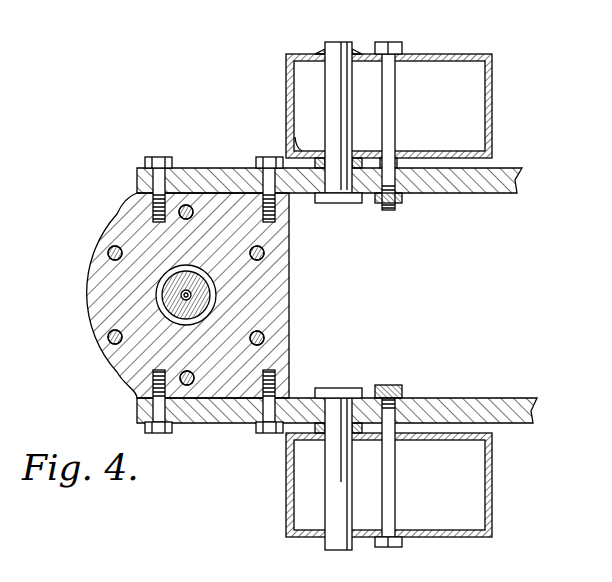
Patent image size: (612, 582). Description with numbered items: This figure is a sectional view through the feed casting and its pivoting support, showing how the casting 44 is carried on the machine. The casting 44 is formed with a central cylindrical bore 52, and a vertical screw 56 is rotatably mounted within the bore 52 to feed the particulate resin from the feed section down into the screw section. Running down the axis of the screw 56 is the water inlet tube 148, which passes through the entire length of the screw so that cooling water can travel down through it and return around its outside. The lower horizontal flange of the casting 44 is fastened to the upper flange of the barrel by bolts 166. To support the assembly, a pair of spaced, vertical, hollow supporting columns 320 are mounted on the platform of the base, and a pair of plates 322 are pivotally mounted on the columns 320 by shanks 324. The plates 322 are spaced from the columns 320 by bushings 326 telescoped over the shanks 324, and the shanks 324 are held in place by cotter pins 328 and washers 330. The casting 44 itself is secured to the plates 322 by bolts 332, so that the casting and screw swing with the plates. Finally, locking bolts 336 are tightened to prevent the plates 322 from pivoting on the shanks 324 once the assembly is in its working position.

The casting 44 is at (179, 316).
The central cylindrical bore 52 is at (123, 362).
The vertical screw 56 is at (190, 295).
The water inlet tube 148 is at (240, 280).
The bolts 166 is at (110, 247).
The supporting columns 320 is at (395, 295).
The plates 322 is at (476, 194).
The shanks 324 is at (345, 290).
The bushings 326 is at (302, 152).
The cotter pins 328 is at (337, 42).
The washers 330 is at (316, 50).
The bolts 332 is at (253, 430).
The locking bolts 336 is at (390, 43).